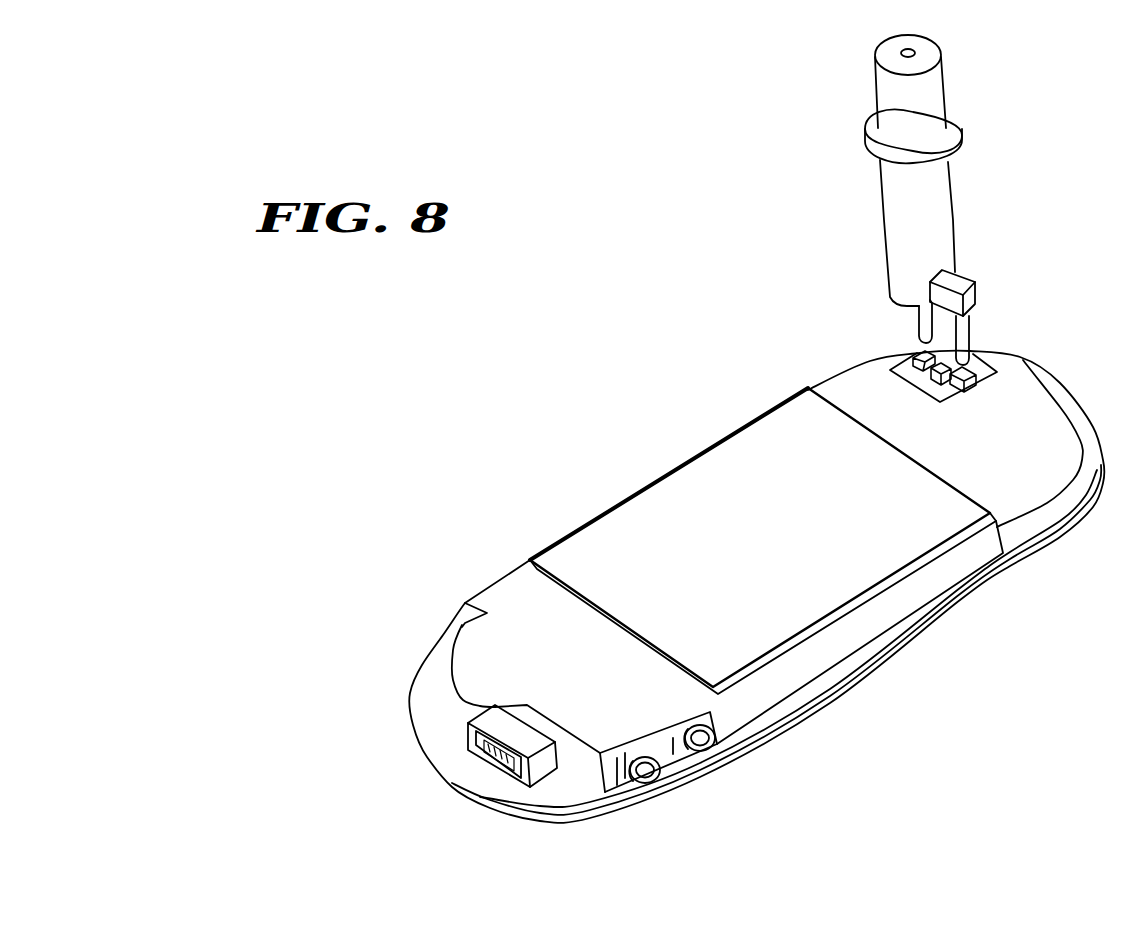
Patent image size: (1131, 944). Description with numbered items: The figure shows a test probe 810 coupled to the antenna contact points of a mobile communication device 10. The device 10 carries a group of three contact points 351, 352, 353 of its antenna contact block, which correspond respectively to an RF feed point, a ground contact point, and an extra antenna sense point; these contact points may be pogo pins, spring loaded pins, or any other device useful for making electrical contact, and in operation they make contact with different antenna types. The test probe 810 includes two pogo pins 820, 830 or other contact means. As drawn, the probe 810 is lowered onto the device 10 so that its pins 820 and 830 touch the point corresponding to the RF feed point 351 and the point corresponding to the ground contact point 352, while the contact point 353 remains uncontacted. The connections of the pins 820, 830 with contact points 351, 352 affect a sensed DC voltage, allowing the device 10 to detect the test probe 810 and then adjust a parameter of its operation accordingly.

The mobile communication device 10 is at (465, 793).
The test probe 810 is at (927, 46).
The pogo pin 820 is at (916, 326).
The pogo pin 830 is at (965, 329).
The contact point 351 is at (918, 355).
The contact point 352 is at (957, 379).
The contact point 353 is at (940, 370).